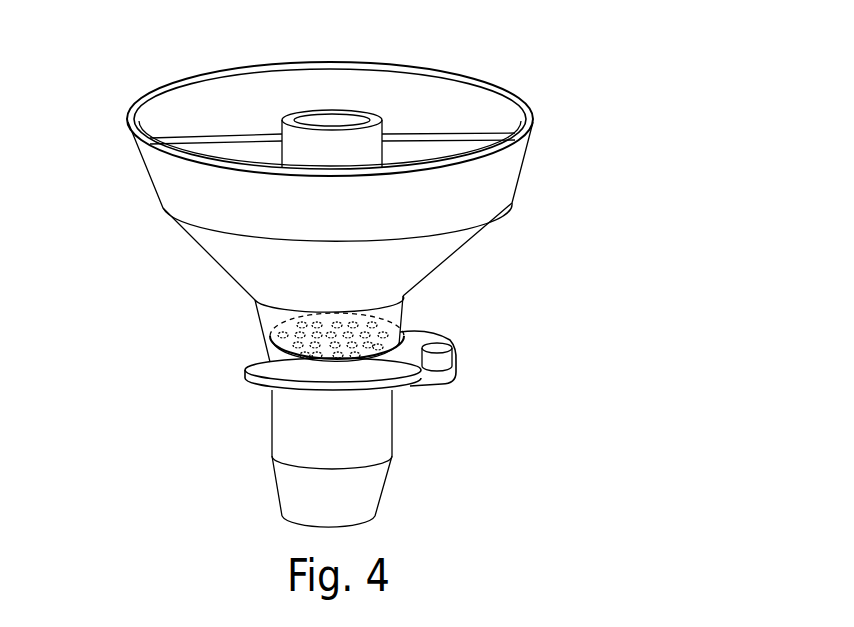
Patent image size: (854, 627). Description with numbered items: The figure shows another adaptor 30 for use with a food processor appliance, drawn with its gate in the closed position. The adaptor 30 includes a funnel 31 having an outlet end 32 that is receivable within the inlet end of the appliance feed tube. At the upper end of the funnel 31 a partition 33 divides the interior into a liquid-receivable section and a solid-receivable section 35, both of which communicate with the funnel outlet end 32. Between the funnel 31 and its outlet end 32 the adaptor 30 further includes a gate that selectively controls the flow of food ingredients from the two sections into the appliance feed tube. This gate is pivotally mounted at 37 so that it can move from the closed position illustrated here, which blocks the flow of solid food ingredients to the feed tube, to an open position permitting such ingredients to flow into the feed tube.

The adaptor 30 is at (556, 150).
The funnel 31 is at (493, 193).
The outlet end 32 is at (387, 490).
The partition 33 is at (468, 130).
The solid-receivable section 35 is at (188, 95).
The pivot mounting 37 is at (453, 357).